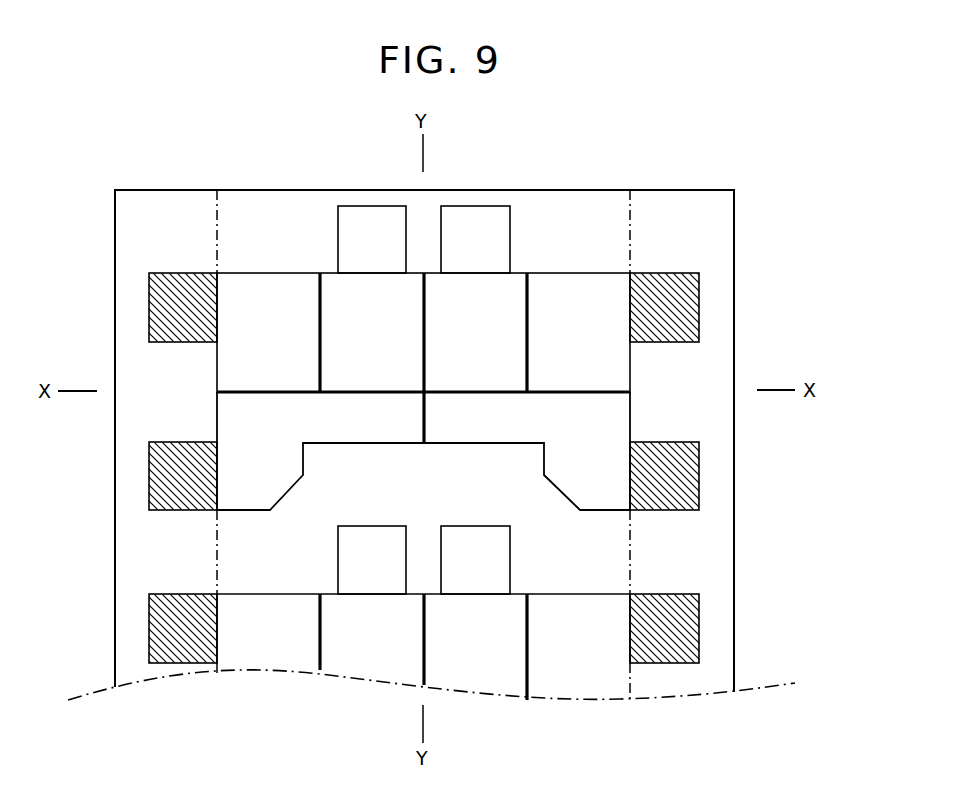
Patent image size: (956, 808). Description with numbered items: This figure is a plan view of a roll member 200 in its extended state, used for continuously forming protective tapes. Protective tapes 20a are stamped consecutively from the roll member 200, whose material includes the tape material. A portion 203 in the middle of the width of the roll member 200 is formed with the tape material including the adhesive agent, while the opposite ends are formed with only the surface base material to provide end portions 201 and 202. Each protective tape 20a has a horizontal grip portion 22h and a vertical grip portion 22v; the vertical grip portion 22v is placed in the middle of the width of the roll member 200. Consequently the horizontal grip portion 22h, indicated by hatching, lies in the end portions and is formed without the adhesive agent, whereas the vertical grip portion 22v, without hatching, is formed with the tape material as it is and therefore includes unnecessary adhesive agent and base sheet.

The roll member 200 is at (737, 202).
The end portion 201 is at (662, 208).
The end portion 202 is at (146, 208).
The portion in the middle of width 203 is at (254, 208).
The protective tape 20a is at (640, 354).
The vertical grip portion 22v is at (348, 216).
The horizontal grip portion 22h is at (683, 296).